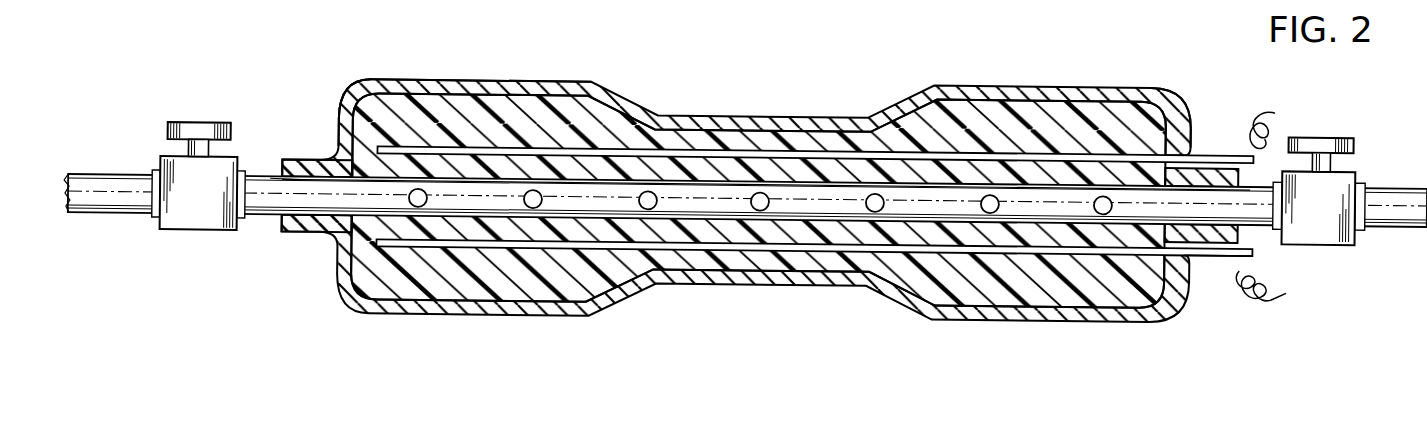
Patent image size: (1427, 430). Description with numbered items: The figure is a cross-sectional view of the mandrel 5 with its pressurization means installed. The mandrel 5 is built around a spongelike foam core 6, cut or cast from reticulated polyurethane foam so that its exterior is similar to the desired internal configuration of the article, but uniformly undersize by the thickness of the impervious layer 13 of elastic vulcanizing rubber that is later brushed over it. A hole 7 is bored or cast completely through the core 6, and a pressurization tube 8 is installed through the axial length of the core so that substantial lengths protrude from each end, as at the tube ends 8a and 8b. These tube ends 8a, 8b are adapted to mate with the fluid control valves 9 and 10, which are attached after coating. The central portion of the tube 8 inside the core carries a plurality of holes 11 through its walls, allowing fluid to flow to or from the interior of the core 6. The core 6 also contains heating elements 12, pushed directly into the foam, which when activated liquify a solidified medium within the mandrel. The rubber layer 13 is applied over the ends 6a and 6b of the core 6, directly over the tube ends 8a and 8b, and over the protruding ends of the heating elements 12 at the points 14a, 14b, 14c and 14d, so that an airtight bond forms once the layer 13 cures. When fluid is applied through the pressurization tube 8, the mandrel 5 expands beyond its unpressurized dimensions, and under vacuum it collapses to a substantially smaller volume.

The mandrel 5 is at (347, 62).
The foam core 6 is at (462, 79).
The end of the core 6a is at (343, 112).
The end of the core 6b is at (1157, 98).
The hole 7 is at (730, 178).
The pressurization tube 8 is at (792, 172).
The end of the pressurization tube 8a is at (283, 168).
The end of the pressurization tube 8b is at (1250, 174).
The fluid control valve 9 is at (173, 229).
The fluid control valve 10 is at (1357, 228).
The holes 11 is at (813, 212).
The heating elements 12 is at (847, 144).
The impervious layer 13 is at (547, 77).
The coating point 14a is at (283, 233).
The coating point 14b is at (1187, 241).
The coating point 14c is at (1237, 216).
The coating point 14d is at (1190, 152).